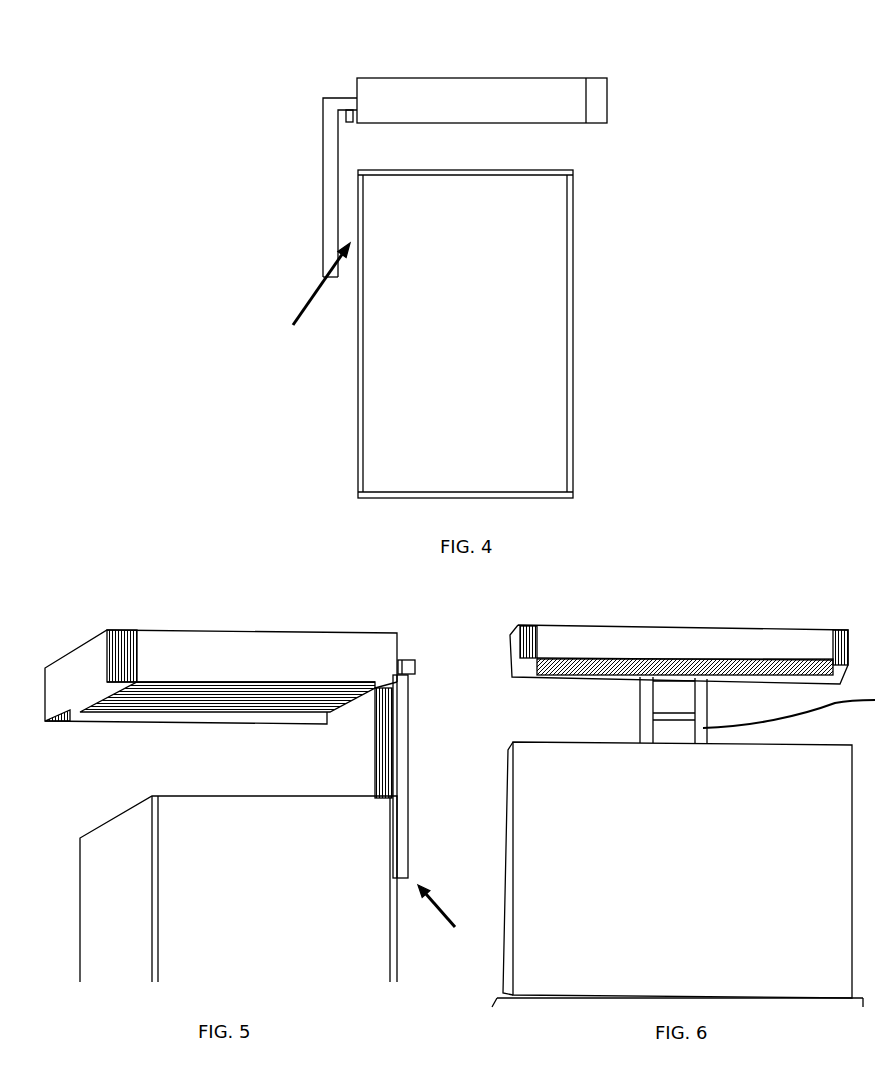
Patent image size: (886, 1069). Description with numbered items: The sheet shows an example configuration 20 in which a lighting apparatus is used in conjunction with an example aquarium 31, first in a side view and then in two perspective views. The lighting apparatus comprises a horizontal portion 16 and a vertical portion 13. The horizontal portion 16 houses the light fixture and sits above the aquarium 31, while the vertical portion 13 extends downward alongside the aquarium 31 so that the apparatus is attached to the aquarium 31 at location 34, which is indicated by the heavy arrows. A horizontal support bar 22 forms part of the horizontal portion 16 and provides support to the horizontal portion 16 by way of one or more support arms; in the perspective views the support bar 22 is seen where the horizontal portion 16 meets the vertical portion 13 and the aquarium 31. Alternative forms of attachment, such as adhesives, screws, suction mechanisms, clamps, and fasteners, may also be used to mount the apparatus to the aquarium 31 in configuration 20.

In FIG. 4, the vertical portion 13 is at (333, 227).
In FIG. 5, the vertical portion 13 is at (395, 735).
In FIG. 4, the horizontal portion 16 is at (598, 103).
In FIG. 5, the horizontal portion 16 is at (82, 656).
In FIG. 4, the configuration 20 is at (514, 79).
In FIG. 5, the configuration 20 is at (206, 634).
In FIG. 6, the configuration 20 is at (705, 555).
In FIG. 5, the horizontal support bar 22 is at (415, 663).
In FIG. 6, the horizontal support bar 22 is at (527, 828).
In FIG. 4, the aquarium 31 is at (560, 297).
In FIG. 5, the aquarium 31 is at (100, 892).
In FIG. 4, the location 34 is at (313, 300).
In FIG. 5, the location 34 is at (443, 917).